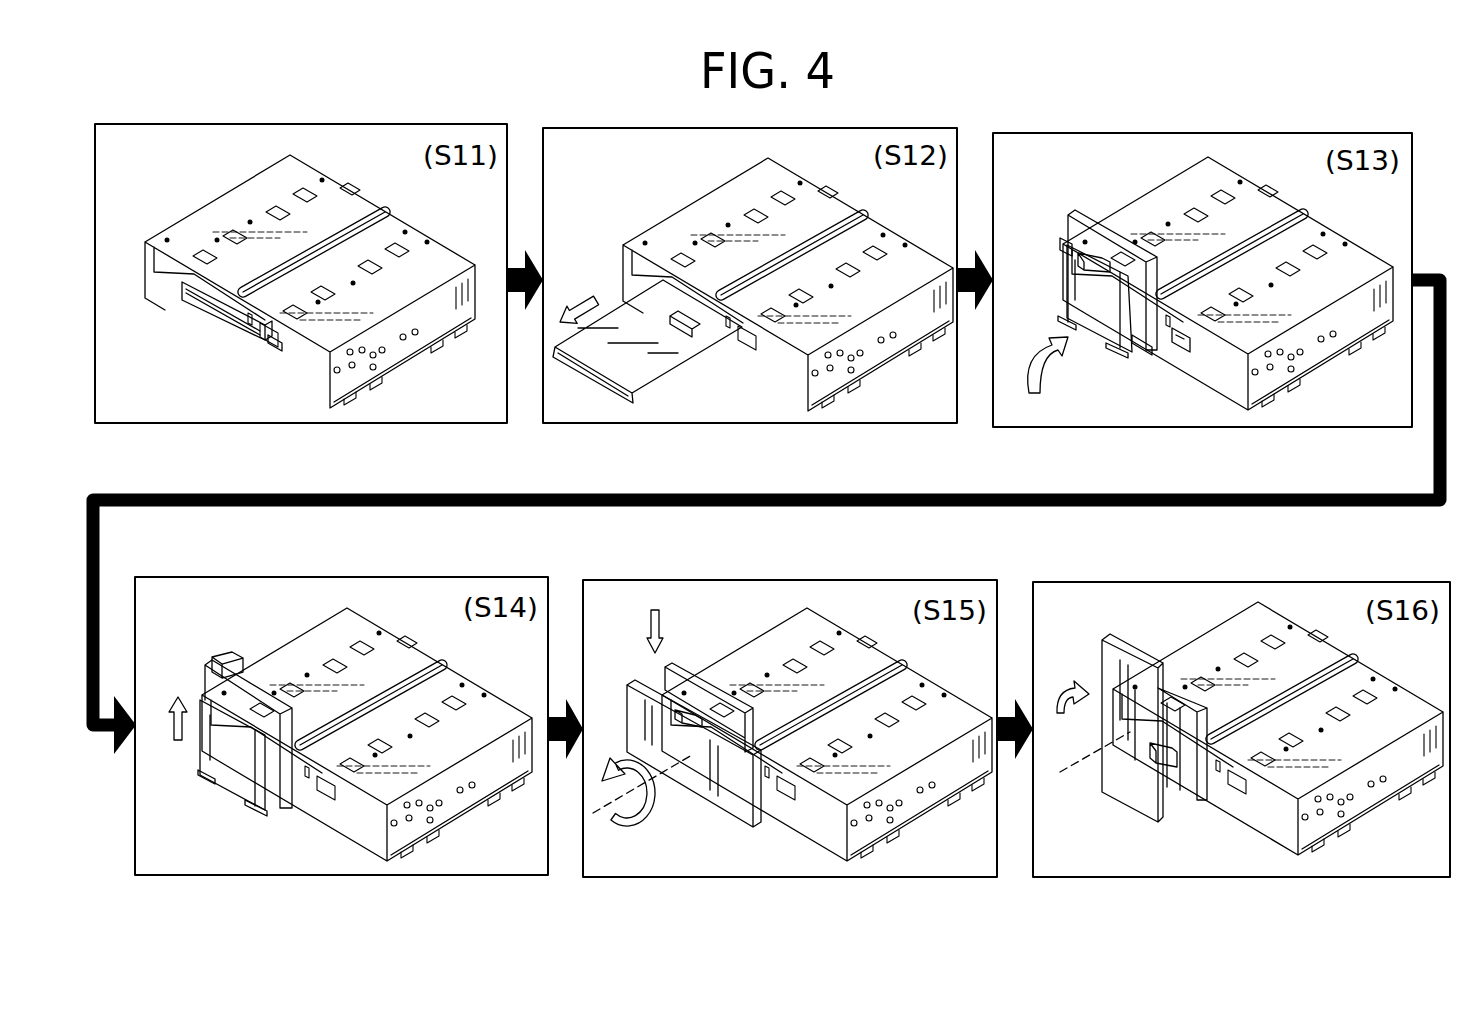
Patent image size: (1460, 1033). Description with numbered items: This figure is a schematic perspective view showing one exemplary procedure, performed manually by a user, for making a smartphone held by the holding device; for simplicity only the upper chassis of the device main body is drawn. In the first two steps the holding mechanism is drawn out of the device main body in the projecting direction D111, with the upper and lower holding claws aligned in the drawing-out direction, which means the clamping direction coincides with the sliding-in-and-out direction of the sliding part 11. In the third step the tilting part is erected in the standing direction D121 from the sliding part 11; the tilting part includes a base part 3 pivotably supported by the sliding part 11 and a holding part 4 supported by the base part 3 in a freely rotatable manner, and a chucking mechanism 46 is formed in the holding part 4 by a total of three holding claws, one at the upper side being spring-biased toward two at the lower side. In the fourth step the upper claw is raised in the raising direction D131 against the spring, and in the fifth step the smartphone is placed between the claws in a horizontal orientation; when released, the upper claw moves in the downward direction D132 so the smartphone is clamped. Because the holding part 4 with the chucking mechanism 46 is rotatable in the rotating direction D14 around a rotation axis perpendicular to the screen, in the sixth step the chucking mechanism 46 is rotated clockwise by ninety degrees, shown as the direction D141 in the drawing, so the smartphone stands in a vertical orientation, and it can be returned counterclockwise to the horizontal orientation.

The base part 3 is at (1232, 232).
The holding part 4 is at (1095, 288).
The sliding part 11 is at (1178, 340).
The chucking mechanism 46 is at (1105, 255).
The projecting direction D111 is at (590, 292).
The standing direction D121 is at (1045, 378).
The raising direction D131 is at (168, 700).
The downward direction D132 is at (650, 627).
The rotating direction D14 is at (642, 818).
The rotation direction D141 is at (1062, 684).